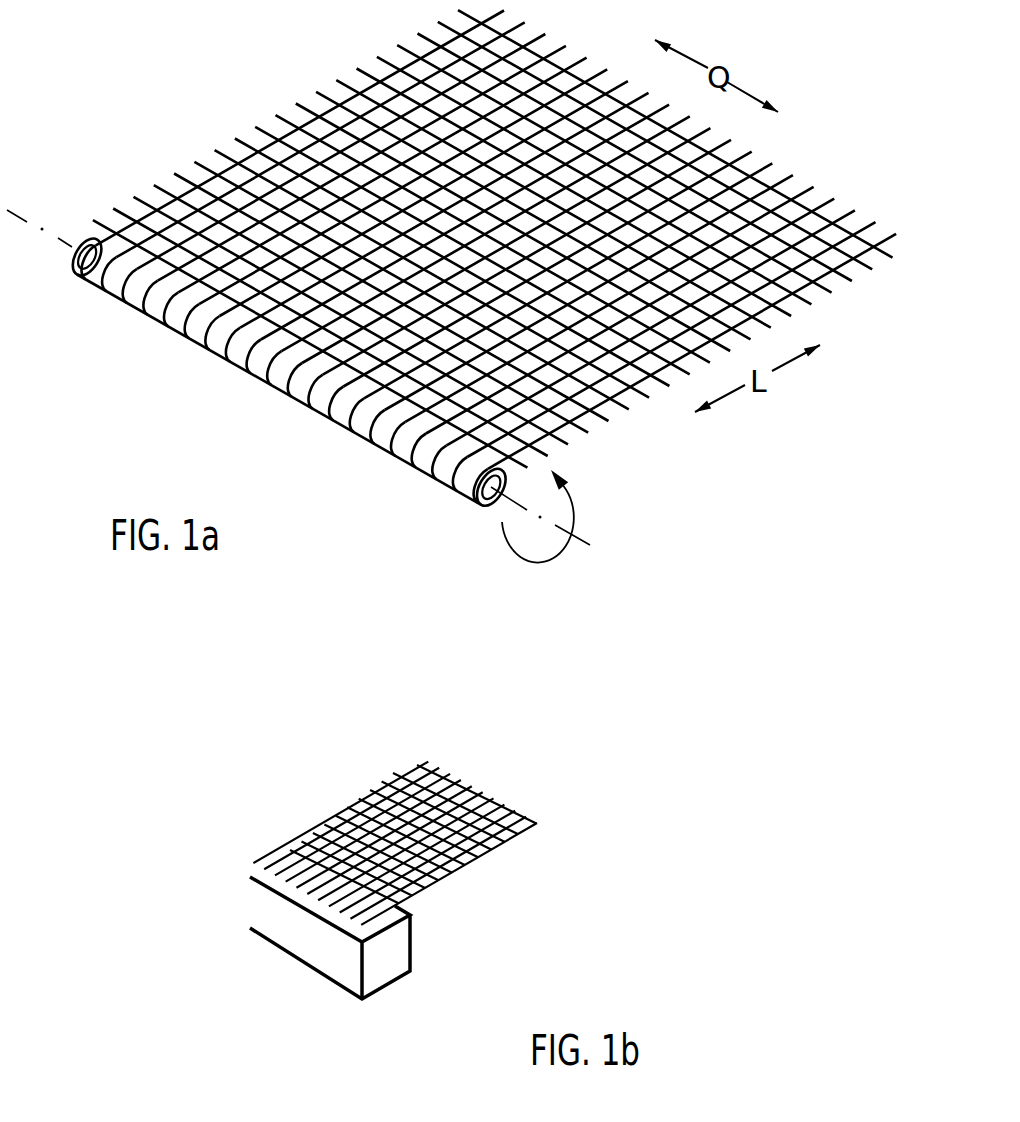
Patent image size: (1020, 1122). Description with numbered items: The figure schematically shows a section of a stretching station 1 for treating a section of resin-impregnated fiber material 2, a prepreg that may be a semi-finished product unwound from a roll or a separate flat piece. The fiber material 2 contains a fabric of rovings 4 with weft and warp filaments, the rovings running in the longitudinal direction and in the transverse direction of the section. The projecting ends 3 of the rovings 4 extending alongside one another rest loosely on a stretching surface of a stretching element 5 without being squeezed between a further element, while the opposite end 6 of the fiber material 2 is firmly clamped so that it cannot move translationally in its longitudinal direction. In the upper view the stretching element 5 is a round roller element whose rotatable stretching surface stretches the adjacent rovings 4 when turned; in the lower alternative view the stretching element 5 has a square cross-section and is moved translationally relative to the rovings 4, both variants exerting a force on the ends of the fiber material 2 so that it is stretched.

In FIG. 1a, the stretching station 1 is at (238, 80).
In FIG. 1a, the resin-impregnated fiber material 2 is at (747, 187).
In FIG. 1a, the projecting ends 3 is at (476, 503).
In FIG. 1a, the rovings 4 is at (345, 423).
In FIG. 1a, the stretching element 5 is at (83, 240).
In FIG. 1b, the stretching element 5 is at (446, 932).
In FIG. 1a, the opposite end 6 is at (875, 245).